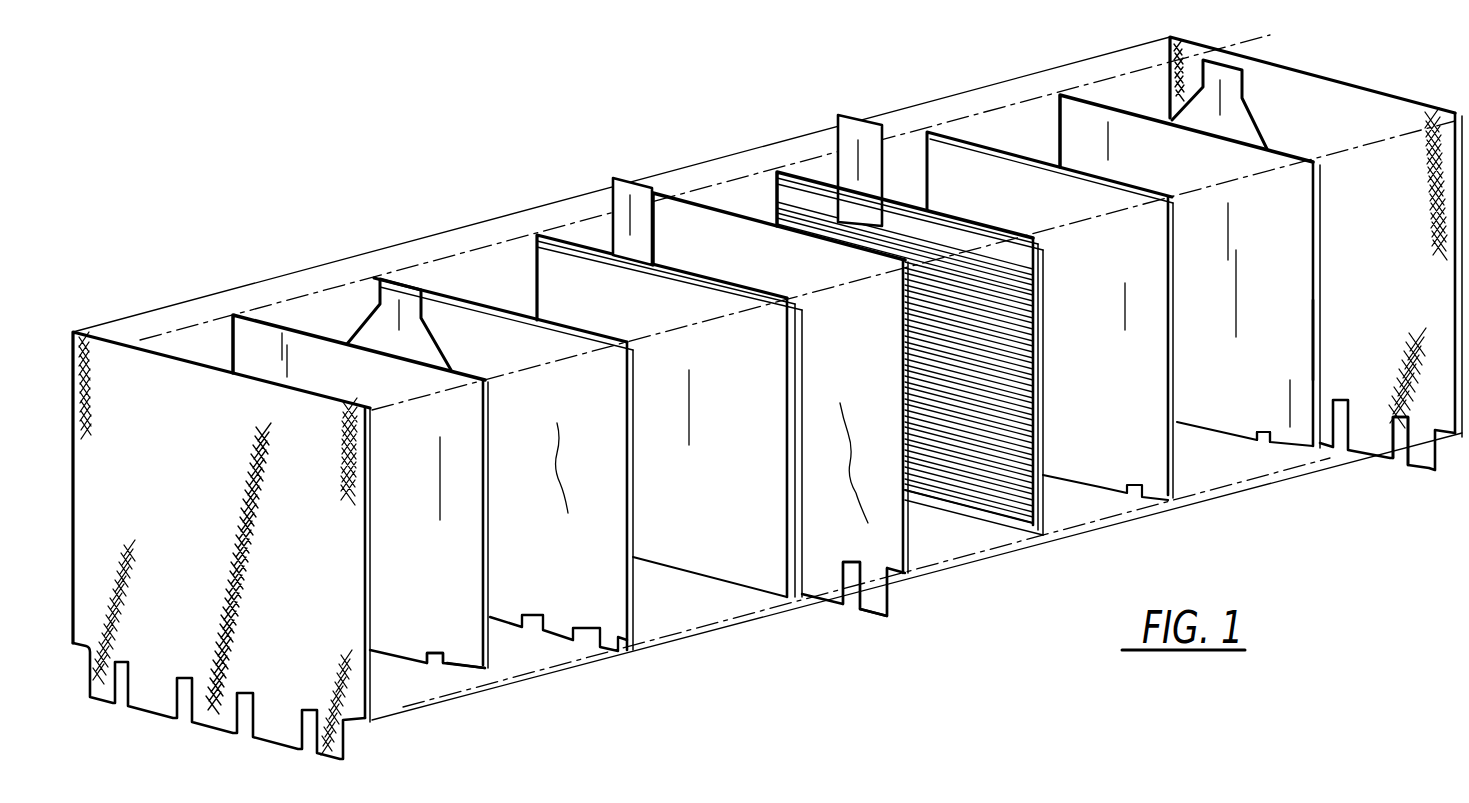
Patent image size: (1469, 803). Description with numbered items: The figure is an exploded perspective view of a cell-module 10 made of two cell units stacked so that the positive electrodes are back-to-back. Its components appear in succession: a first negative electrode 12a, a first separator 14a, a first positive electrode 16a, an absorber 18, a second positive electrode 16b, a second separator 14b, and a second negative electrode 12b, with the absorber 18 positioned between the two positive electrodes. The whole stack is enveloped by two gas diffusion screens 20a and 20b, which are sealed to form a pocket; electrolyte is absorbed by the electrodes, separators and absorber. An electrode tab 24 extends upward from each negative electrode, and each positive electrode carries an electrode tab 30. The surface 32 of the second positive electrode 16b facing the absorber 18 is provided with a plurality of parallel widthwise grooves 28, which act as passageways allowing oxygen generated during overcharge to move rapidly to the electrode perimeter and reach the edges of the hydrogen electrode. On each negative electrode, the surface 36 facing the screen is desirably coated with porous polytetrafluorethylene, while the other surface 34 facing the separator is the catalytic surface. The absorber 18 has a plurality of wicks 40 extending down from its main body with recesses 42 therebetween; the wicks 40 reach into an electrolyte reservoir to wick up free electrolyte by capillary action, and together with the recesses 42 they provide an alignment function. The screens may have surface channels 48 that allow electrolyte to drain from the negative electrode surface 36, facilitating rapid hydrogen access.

The cell-module 10 is at (607, 80).
The first negative electrode 12a is at (265, 313).
The second negative electrode 12b is at (1088, 98).
The first separator 14a is at (472, 302).
The second separator 14b is at (953, 137).
The first positive electrode 16a is at (537, 233).
The second positive electrode 16b is at (807, 168).
The absorber 18 is at (673, 197).
The gas diffusion screen 20a is at (232, 524).
The gas diffusion screen 20b is at (1378, 92).
The electrode tab 24 is at (376, 300).
The grooves 28 is at (1023, 510).
The electrode tab 30 is at (623, 178).
The surface of positive electrode 32 is at (978, 495).
The catalytic surface 34 is at (490, 652).
The surface of negative electrode 36 is at (470, 655).
The wicks 40 is at (872, 614).
The recesses 42 is at (843, 607).
The surface channels 48 is at (1377, 413).